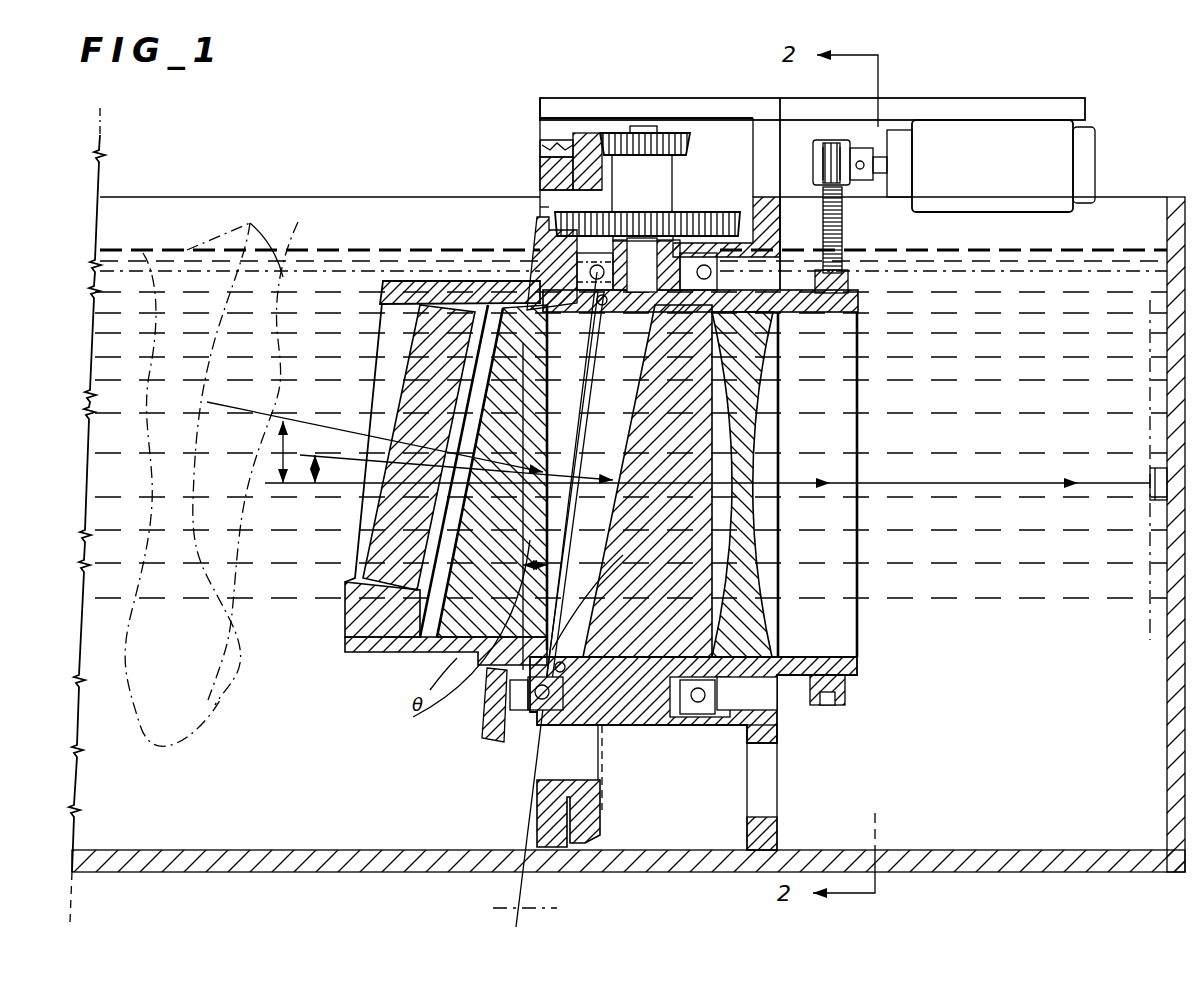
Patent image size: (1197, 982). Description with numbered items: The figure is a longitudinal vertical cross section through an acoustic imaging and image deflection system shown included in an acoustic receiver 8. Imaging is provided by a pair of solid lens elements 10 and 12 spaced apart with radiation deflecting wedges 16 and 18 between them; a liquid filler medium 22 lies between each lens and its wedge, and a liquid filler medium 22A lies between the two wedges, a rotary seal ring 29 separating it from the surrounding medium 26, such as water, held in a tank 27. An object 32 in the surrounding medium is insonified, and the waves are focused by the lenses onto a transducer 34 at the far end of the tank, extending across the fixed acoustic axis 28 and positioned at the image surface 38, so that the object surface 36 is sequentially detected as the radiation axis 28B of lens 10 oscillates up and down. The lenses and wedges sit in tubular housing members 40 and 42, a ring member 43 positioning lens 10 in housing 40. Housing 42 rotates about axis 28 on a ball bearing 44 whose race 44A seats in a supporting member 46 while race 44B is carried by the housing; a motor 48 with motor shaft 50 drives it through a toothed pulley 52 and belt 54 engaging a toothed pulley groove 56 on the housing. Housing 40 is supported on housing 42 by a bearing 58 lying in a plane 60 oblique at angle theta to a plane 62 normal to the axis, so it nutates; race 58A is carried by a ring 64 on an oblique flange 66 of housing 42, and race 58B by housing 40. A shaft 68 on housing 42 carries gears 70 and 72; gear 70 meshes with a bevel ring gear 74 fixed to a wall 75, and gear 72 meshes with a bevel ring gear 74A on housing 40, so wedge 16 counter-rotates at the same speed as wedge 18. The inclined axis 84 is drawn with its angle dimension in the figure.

The acoustic receiver 8 is at (425, 88).
The lens element 10 is at (428, 333).
The lens element 12 is at (760, 378).
The wedge 16 is at (445, 662).
The wedge 18 is at (700, 547).
The liquid filler medium 22 is at (475, 368).
The liquid filler medium 22A is at (588, 380).
The surrounding medium 26 is at (992, 782).
The tank 27 is at (1176, 196).
The acoustic axis 28 is at (934, 483).
The radiation axis 28B is at (278, 415).
The rotary seal ring 29 is at (590, 410).
The object 32 is at (203, 712).
The transducer 34 is at (1150, 468).
The object surface 36 is at (262, 277).
The image surface 38 is at (1148, 322).
The tubular housing member 40 is at (415, 280).
The tubular housing member 42 is at (858, 305).
The ring member 43 is at (366, 603).
The ball bearing 44 is at (707, 250).
The race 44A is at (674, 714).
The race 44B is at (747, 693).
The supporting member 46 is at (778, 730).
The motor 48 is at (1045, 175).
The motor shaft 50 is at (880, 165).
The toothed pulley 52 is at (832, 138).
The belt 54 is at (843, 225).
The toothed pulley groove 56 is at (848, 692).
The bearing 58 is at (606, 303).
The race 58A is at (597, 262).
The race 58B is at (582, 296).
The plane 60 is at (624, 556).
The plane 62 is at (480, 511).
The ring 64 is at (551, 226).
The oblique flange 66 is at (583, 716).
The shaft 68 is at (645, 125).
The gear 70 is at (612, 131).
The gear 72 is at (712, 255).
The bevel ring gear 74 is at (584, 147).
The bevel ring gear 74A is at (540, 250).
The wall 75 is at (556, 172).
The inclined rotor axis 84 is at (333, 454).